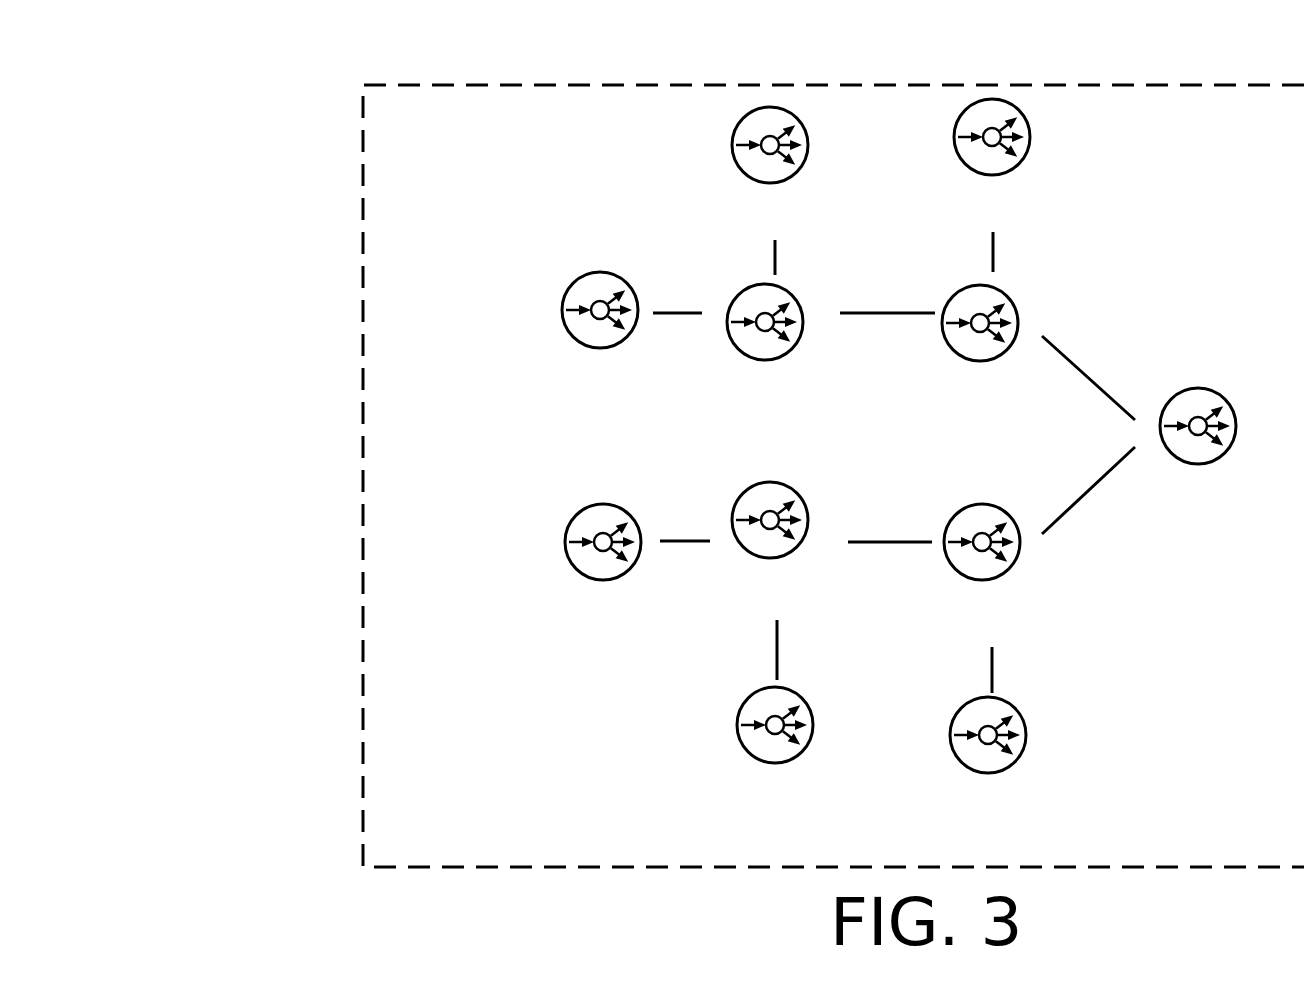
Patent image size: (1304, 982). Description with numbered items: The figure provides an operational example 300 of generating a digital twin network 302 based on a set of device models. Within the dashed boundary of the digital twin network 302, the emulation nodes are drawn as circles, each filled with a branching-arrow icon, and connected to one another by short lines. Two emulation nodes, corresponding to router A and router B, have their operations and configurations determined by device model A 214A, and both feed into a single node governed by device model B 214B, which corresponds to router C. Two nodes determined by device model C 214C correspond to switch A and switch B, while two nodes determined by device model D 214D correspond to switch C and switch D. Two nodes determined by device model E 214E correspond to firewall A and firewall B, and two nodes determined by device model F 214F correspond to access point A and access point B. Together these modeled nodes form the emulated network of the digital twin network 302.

The operational example 300 is at (237, 57).
The digital twin network 302 is at (448, 159).
The device model A 214A is at (954, 409).
The device model B 214B is at (1172, 512).
The device model C 214C is at (739, 408).
The device model D 214D is at (574, 396).
The device model E 214E is at (966, 223).
The device model F 214F is at (745, 231).